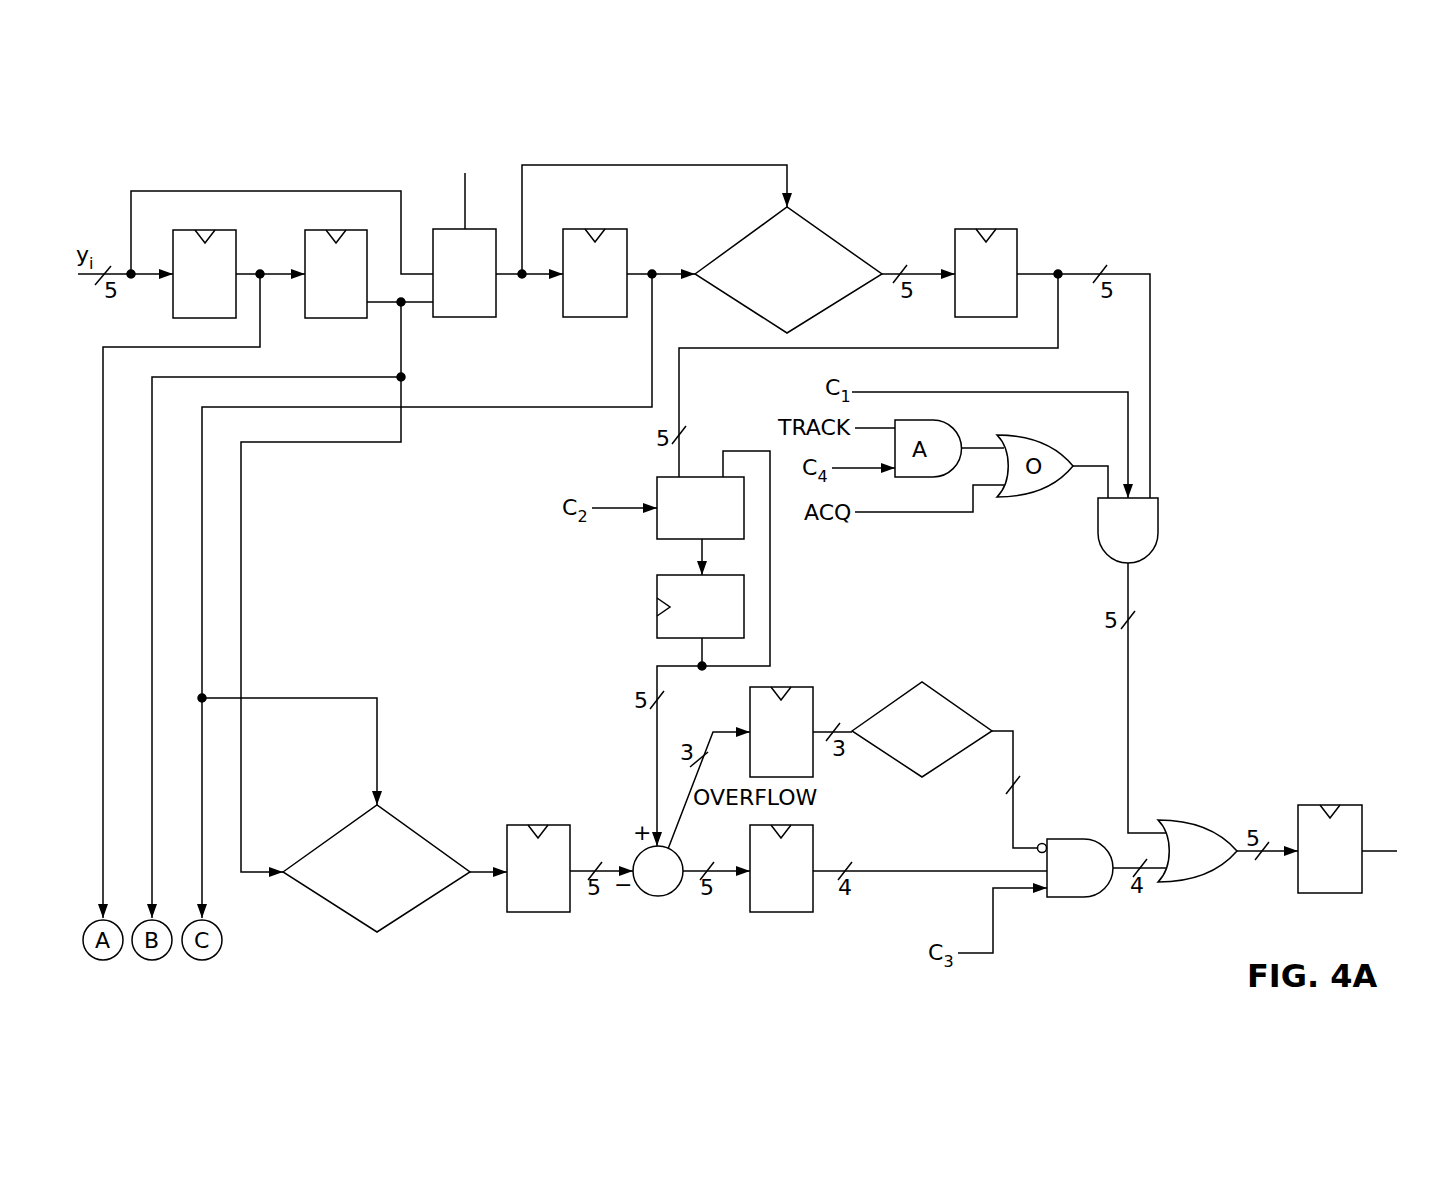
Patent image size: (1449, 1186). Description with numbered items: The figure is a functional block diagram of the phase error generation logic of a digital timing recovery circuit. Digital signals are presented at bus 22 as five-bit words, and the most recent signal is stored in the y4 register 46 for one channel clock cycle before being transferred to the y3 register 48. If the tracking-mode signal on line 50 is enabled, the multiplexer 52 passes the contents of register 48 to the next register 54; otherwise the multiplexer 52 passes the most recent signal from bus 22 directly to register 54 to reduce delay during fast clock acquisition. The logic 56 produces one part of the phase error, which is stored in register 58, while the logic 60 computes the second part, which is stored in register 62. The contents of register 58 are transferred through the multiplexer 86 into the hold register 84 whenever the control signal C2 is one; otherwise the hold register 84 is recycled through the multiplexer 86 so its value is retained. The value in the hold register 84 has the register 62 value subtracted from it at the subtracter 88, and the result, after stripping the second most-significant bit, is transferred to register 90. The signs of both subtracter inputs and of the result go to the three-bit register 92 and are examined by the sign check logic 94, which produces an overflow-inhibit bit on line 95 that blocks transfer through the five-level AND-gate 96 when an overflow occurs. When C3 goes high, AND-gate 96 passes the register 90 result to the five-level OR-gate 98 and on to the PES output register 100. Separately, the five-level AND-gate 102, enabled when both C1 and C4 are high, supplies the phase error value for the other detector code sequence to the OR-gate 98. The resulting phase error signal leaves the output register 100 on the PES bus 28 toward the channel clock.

The bus 22 is at (175, 191).
The y4 register 46 is at (226, 230).
The y3 register 48 is at (356, 230).
The tracking-mode signal line 50 is at (465, 200).
The multiplexer 52 is at (475, 318).
The register 54 is at (612, 229).
The logic 56 is at (832, 232).
The register 58 is at (1002, 229).
The logic 60 is at (418, 830).
The register 62 is at (543, 912).
The hold register 84 is at (657, 590).
The multiplexer 86 is at (657, 492).
The subtracter 88 is at (660, 896).
The register 90 is at (785, 912).
The 3-bit register 92 is at (805, 687).
The sign check logic 94 is at (965, 703).
The overflow-inhibit line 95 is at (1018, 820).
The 5-level AND-gate 96 is at (1078, 897).
The 5-level OR-gate 98 is at (1203, 820).
The PES output register 100 is at (1350, 805).
The 5-level AND-gate 102 is at (1158, 535).
The PES bus 28 is at (1383, 852).